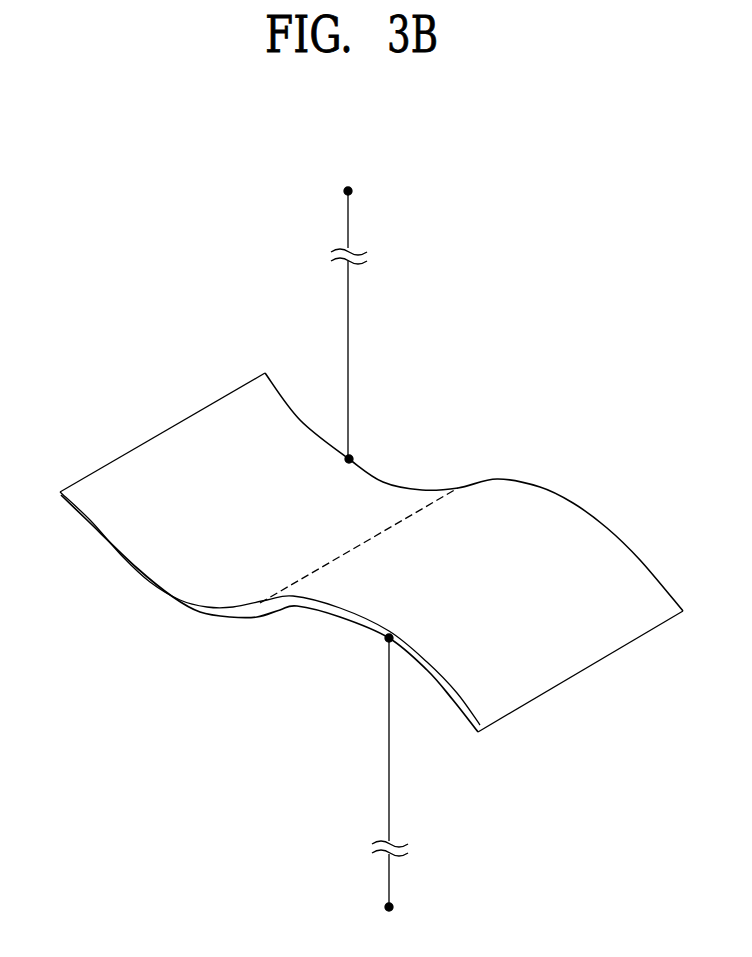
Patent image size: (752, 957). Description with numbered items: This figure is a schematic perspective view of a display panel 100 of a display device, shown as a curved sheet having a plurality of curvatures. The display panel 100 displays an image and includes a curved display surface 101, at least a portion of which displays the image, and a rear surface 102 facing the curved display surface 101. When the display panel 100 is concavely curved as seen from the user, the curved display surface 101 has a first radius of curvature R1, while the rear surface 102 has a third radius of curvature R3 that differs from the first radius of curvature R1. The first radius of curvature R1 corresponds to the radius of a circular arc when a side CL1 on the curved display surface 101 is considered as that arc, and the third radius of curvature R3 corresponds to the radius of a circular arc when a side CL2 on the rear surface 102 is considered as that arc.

The display panel 100 is at (379, 533).
The curved display surface 101 is at (370, 552).
The rear surface 102 is at (178, 606).
The side on the curved display surface CL1 is at (395, 483).
The side on the rear surface CL2 is at (343, 617).
The first radius of curvature R1 is at (355, 325).
The third radius of curvature R3 is at (396, 772).